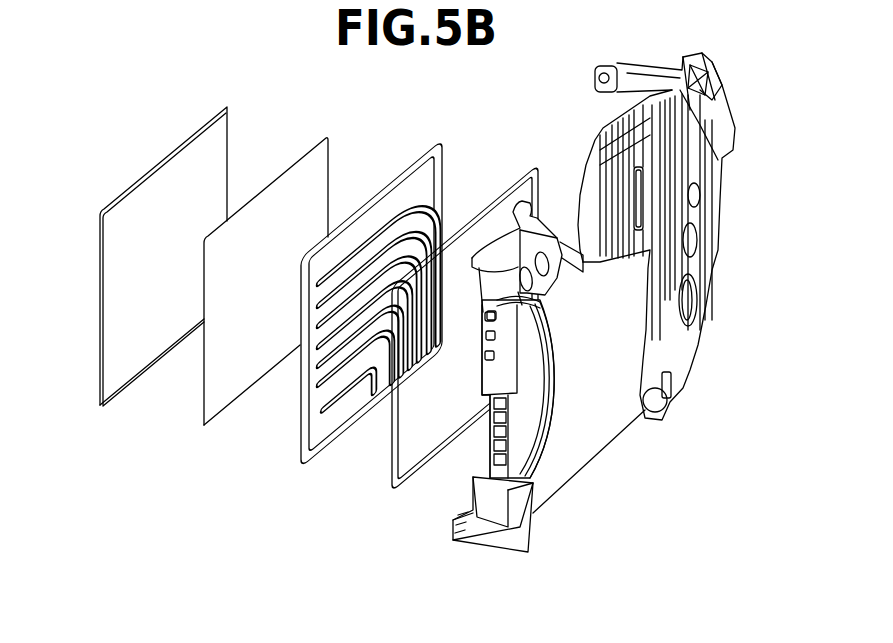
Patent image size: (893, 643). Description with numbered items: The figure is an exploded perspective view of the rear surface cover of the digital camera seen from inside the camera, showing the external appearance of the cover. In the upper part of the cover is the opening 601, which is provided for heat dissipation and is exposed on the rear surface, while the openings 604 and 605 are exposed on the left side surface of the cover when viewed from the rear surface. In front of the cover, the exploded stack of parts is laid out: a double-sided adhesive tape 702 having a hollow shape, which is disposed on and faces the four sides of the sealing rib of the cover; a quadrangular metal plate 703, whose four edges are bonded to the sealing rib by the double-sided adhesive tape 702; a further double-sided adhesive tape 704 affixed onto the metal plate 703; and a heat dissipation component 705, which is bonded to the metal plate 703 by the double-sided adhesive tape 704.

The opening 601 is at (647, 342).
The opening 604 is at (495, 355).
The opening 605 is at (540, 463).
The double-sided adhesive tape 702 is at (397, 488).
The metal plate 703 is at (318, 455).
The double-sided adhesive tape 704 is at (213, 413).
The heat dissipation component 705 is at (113, 398).